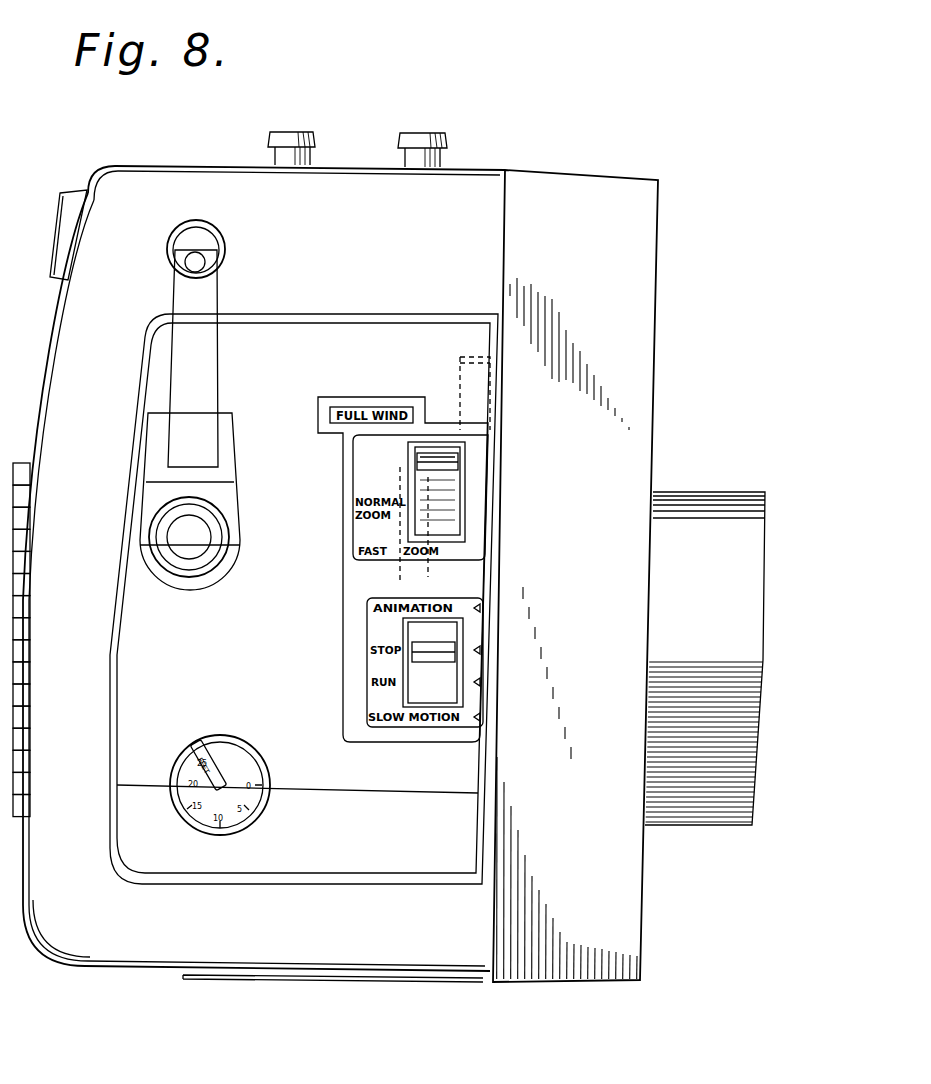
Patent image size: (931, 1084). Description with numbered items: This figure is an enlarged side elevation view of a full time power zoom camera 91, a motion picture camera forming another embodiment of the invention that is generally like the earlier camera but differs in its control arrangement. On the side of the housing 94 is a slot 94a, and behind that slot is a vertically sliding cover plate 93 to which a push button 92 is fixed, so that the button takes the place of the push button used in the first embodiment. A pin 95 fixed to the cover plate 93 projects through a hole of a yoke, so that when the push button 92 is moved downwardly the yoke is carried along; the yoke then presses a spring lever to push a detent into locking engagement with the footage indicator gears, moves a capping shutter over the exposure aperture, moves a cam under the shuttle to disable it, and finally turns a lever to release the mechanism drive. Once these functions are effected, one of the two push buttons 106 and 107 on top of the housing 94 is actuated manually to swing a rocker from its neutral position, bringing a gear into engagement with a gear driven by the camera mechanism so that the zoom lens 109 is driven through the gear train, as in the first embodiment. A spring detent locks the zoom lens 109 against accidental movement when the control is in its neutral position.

The full time power zoom camera 91 is at (200, 986).
The push button 92 is at (432, 448).
The cover plate 93 is at (443, 523).
The housing 94 is at (127, 953).
The slot 94a is at (458, 511).
The pin 95 is at (457, 468).
The push button 106 is at (440, 138).
The push button 107 is at (308, 133).
The zoom lens 109 is at (687, 492).